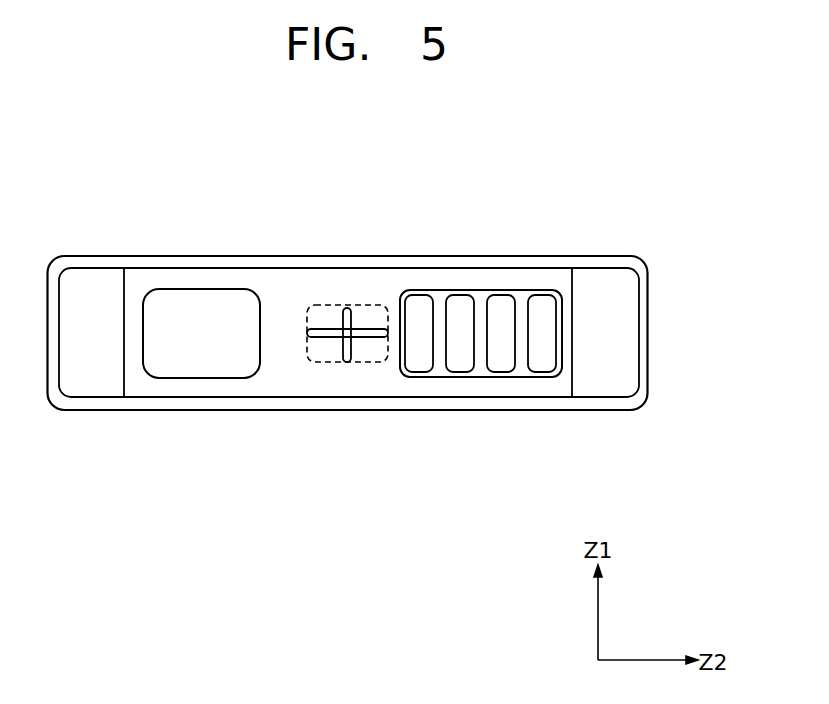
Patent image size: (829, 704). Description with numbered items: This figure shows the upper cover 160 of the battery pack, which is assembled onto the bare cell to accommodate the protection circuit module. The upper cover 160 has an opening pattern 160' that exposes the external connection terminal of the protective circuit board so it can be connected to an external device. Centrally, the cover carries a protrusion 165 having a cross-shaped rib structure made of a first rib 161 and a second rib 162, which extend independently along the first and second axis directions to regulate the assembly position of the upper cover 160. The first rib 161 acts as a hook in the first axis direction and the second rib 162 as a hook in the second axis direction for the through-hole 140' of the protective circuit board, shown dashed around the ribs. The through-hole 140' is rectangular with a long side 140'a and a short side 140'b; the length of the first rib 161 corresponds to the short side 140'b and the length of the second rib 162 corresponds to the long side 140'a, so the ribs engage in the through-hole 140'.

The upper cover 160 is at (348, 286).
The opening pattern 160' is at (481, 382).
The first rib 161 is at (347, 308).
The second rib 162 is at (372, 333).
The protrusion 165 is at (357, 262).
The through-hole 140' is at (317, 340).
The long side 140'a is at (357, 318).
The short side 140'b is at (307, 390).